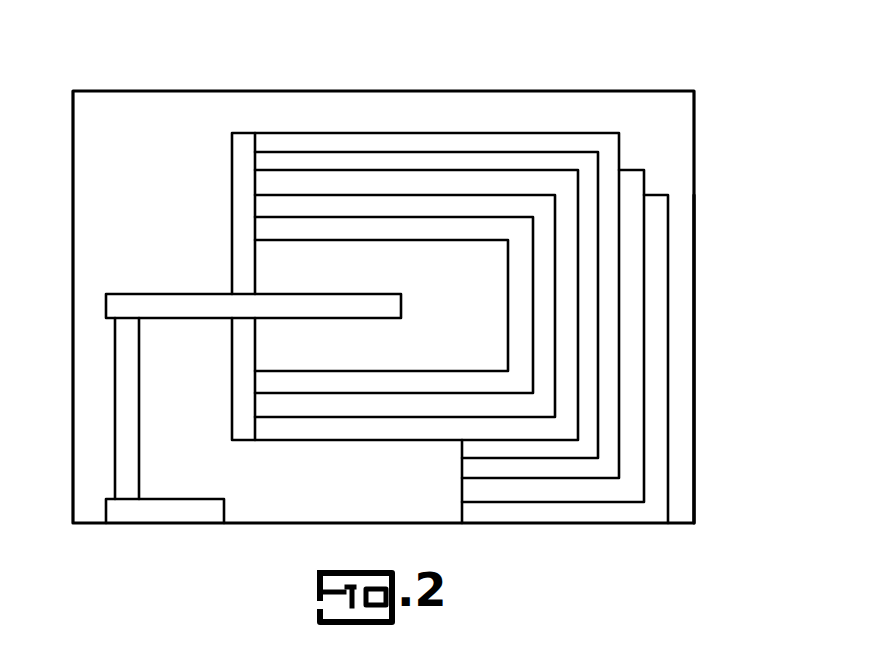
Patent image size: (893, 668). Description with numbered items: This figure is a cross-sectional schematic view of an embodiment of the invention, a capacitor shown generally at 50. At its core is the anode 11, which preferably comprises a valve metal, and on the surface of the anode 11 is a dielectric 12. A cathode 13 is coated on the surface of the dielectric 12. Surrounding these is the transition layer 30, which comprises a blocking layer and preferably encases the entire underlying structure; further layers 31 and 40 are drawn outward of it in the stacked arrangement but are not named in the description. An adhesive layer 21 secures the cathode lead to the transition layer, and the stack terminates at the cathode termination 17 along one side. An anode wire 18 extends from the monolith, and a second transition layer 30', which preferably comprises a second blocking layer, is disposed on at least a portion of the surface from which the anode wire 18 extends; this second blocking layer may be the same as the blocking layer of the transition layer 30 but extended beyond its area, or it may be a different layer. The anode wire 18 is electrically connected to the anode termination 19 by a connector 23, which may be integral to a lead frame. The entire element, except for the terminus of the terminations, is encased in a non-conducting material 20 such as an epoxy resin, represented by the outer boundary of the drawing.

The capacitor 50 is at (721, 539).
The second transition layer 30' is at (216, 243).
The anode 11 is at (333, 267).
The dielectric layer 12 is at (417, 230).
The cathode layer 13 is at (458, 207).
The transition layer 30 is at (495, 305).
The coil winding segment 31 is at (593, 287).
The outer coil turn 40 is at (613, 317).
The adhesive layer 21 is at (633, 387).
The cathode termination 17 is at (658, 420).
The non-conducting material 20 is at (680, 333).
The anode wire 18 is at (128, 300).
The connector 23 is at (118, 397).
The anode termination 19 is at (108, 526).